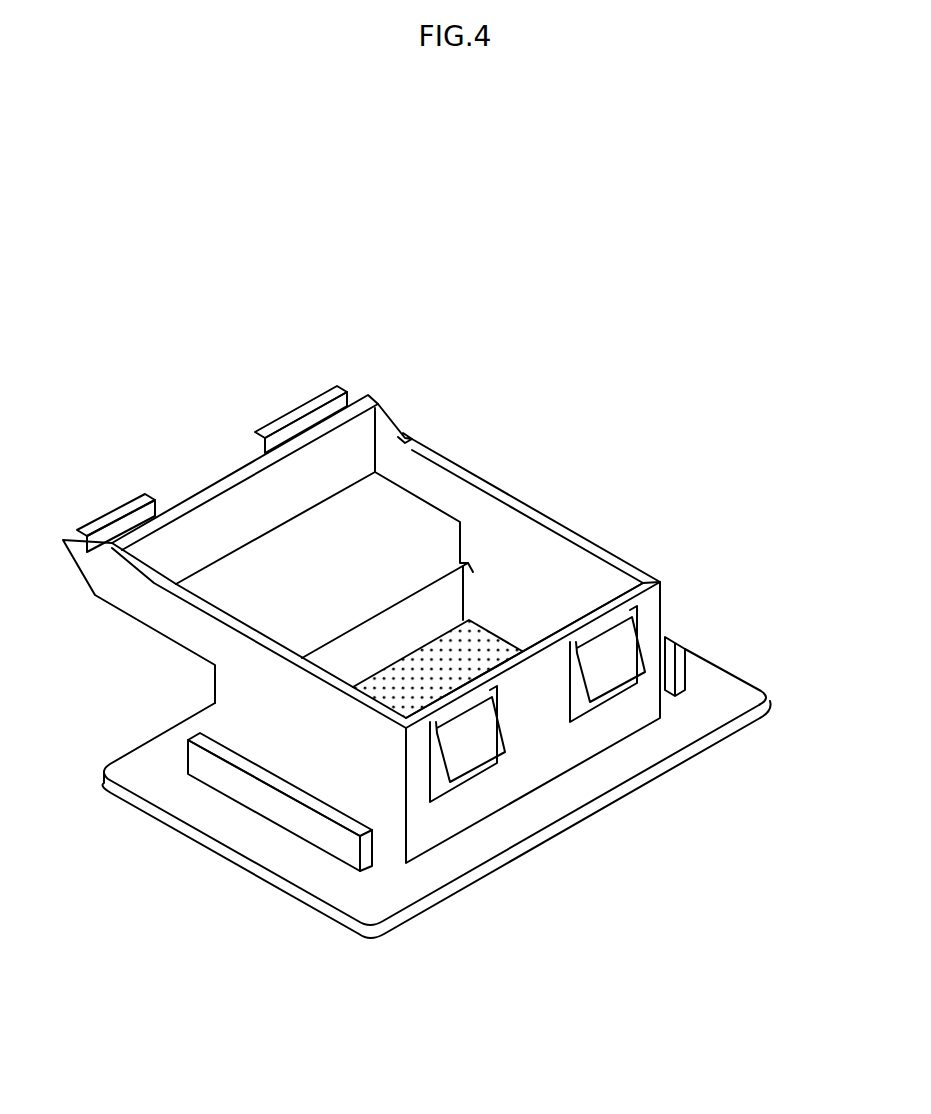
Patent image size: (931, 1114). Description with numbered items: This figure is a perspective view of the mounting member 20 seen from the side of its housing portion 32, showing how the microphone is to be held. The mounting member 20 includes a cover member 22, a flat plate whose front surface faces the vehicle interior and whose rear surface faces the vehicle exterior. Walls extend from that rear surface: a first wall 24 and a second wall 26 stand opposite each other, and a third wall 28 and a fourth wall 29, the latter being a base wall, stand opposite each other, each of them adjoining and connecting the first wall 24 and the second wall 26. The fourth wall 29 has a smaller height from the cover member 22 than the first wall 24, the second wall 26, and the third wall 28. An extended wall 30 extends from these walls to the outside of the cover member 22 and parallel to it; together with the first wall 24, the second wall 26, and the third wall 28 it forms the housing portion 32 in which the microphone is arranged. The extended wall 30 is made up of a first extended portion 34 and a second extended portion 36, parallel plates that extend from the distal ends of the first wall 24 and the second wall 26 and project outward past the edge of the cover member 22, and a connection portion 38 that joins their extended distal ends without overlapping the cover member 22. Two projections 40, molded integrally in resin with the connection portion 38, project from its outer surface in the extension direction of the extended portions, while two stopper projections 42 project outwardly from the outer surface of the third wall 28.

The mounting member 20 is at (645, 433).
The cover member 22 is at (718, 690).
The first wall 24 is at (257, 728).
The second wall 26 is at (510, 530).
The third wall 28 is at (535, 730).
The fourth wall 29 is at (443, 597).
The extended wall 30 is at (386, 437).
The housing portion 32 is at (566, 579).
The first extended portion 34 is at (137, 590).
The second extended portion 36 is at (423, 475).
The connection portion 38 is at (238, 478).
The projections 40 is at (316, 415).
The stopper projections 42 is at (617, 675).